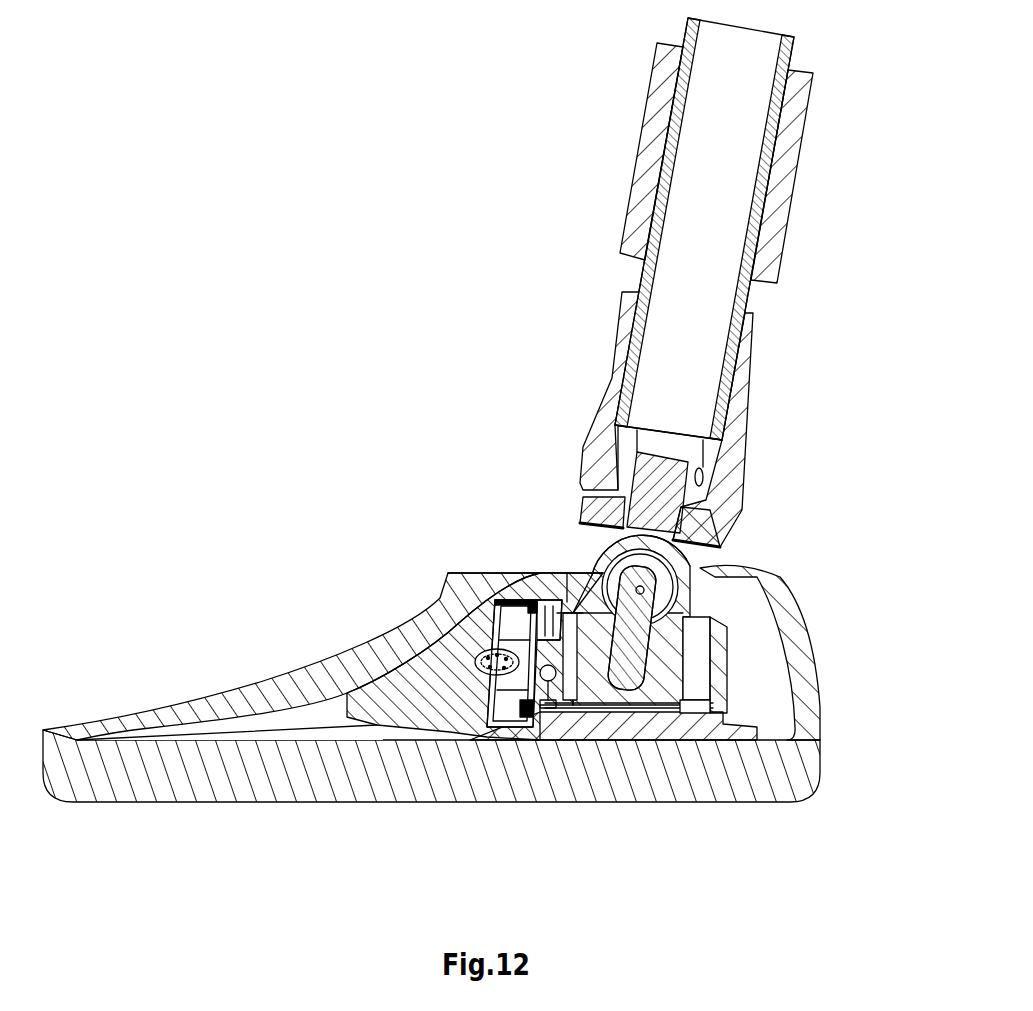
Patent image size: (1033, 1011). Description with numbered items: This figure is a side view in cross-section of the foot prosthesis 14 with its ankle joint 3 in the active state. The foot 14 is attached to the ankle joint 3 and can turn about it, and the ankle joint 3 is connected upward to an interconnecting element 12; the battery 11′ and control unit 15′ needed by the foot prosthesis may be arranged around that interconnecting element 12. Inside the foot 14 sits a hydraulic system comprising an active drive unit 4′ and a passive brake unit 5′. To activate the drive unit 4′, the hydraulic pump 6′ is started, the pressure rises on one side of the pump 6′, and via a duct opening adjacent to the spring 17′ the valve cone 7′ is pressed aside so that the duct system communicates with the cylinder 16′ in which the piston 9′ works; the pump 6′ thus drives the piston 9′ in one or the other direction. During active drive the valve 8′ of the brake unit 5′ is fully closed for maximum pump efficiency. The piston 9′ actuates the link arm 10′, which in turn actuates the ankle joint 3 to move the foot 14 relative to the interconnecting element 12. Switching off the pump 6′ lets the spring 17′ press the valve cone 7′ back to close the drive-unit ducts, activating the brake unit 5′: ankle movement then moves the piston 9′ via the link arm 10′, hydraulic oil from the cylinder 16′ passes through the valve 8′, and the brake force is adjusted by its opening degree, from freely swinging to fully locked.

The interconnecting element 12 is at (570, 238).
The battery 11′ is at (652, 149).
The control unit 15′ is at (800, 167).
The ankle joint 3 is at (768, 523).
The foot prosthesis 14 is at (240, 662).
The link arm 10′ is at (700, 573).
The piston 9′ is at (683, 657).
The cylinder 16′ is at (693, 698).
The brake unit 5′ is at (563, 705).
The drive unit 4′ is at (537, 725).
The hydraulic pump 6′ is at (450, 573).
The valve cone 7′ is at (502, 593).
The spring 17′ is at (537, 602).
The valve 8′ is at (560, 602).